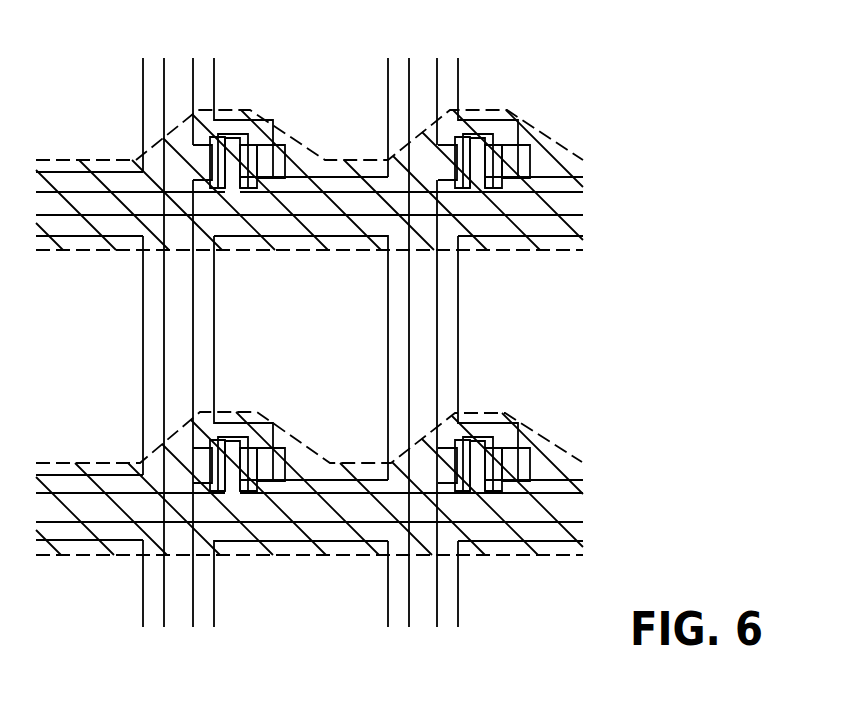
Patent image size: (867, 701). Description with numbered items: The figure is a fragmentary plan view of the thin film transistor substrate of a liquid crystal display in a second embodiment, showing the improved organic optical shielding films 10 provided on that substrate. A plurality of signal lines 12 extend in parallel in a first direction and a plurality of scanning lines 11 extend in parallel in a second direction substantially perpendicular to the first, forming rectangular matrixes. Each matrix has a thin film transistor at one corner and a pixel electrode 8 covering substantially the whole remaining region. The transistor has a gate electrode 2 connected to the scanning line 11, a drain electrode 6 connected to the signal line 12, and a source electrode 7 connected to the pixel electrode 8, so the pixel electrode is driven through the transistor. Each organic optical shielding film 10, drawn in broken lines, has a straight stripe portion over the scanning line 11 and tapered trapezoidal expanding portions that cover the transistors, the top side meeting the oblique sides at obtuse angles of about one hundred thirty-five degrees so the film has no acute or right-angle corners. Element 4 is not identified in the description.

The gate electrode 2 is at (234, 492).
The semiconductor layer 4 is at (220, 447).
The drain electrode 6 is at (198, 465).
The source electrode 7 is at (278, 468).
The pixel electrode 8 is at (388, 300).
The organic optical shielding film 10 is at (532, 252).
The scanning line 11 is at (524, 517).
The signal line 12 is at (422, 607).